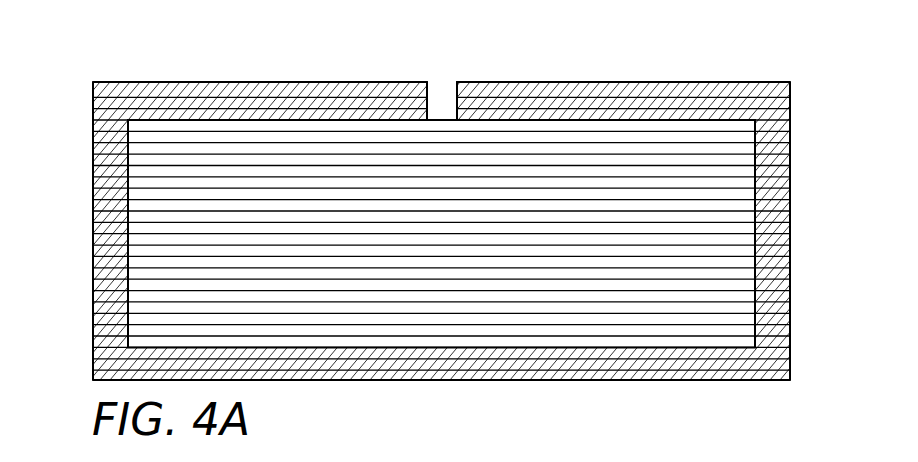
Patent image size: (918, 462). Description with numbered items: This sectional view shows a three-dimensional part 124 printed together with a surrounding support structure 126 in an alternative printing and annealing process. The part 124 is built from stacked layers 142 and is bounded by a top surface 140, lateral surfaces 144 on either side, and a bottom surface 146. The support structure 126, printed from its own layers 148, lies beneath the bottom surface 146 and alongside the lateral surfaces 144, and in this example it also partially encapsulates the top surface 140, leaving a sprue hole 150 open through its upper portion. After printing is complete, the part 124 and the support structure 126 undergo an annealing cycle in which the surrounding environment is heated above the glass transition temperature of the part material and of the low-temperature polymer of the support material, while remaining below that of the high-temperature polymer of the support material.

The 3D part 124 is at (624, 104).
The support structure 126 is at (806, 174).
The top surface 140 is at (343, 118).
The layers 142 is at (177, 152).
The lateral surfaces 144 is at (128, 232).
The bottom surface 146 is at (452, 348).
The layers 148 is at (93, 140).
The sprue hole 150 is at (458, 72).